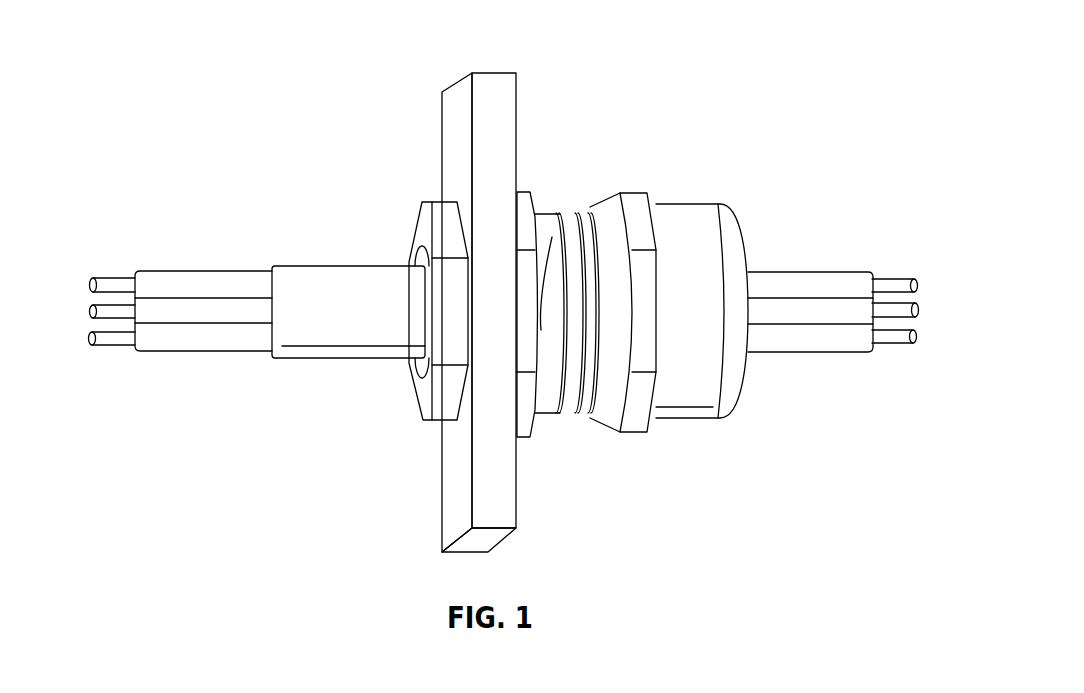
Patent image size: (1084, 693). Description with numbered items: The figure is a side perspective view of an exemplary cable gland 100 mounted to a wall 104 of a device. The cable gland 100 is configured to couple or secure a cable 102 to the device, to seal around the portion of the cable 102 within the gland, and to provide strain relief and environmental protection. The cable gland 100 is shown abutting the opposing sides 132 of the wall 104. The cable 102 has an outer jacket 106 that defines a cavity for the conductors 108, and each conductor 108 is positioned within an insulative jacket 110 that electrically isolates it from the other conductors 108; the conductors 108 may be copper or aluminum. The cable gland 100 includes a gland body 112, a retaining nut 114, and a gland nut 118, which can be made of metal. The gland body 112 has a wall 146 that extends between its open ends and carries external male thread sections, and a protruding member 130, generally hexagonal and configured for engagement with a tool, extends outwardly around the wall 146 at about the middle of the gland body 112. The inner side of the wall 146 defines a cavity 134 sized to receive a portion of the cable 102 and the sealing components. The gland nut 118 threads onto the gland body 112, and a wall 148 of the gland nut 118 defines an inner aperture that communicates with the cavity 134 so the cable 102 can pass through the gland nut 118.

The cable gland 100 is at (665, 114).
The cable 102 is at (338, 267).
The wall 104 is at (500, 98).
The outer jacket 106 is at (345, 320).
The conductors 108 is at (90, 337).
The insulative jacket 110 is at (205, 335).
The gland body 112 is at (532, 205).
The retaining nut 114 is at (440, 222).
The gland nut 118 is at (683, 220).
The protruding member 130 is at (523, 190).
The opposing sides of the wall 132 is at (456, 501).
The cavity 134 is at (517, 498).
The wall of the gland body 146 is at (555, 395).
The wall of the gland nut 148 is at (677, 383).